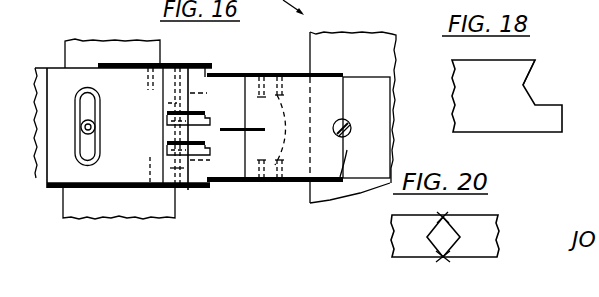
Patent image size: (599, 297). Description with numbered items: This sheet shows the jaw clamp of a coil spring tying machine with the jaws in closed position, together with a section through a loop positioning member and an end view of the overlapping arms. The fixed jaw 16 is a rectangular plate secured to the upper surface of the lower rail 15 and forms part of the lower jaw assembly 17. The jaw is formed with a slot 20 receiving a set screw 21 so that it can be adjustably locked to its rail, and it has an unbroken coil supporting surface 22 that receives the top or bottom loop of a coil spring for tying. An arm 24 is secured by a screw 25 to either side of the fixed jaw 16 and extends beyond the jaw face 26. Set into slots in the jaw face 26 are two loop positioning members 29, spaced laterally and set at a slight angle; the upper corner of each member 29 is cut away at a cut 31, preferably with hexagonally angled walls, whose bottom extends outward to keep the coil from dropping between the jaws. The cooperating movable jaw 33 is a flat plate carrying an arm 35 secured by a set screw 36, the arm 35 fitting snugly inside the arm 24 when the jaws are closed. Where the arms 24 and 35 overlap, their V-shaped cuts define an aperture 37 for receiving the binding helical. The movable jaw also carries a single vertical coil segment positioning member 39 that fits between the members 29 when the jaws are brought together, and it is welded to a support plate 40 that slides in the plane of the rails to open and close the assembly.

In FIG. 16, the lower rail 15 is at (78, 45).
In FIG. 16, the fixed jaw 16 is at (57, 64).
In FIG. 16, the lower jaw assembly 17 is at (217, 65).
In FIG. 16, the slot 20 is at (88, 160).
In FIG. 16, the set screw 21 is at (82, 128).
In FIG. 16, the coil supporting surface 22 is at (178, 182).
In FIG. 16, the arm 24 is at (170, 190).
In FIG. 20, the arm 24 is at (411, 252).
In FIG. 16, the screw 25 is at (133, 63).
In FIG. 16, the jaw face 26 is at (191, 172).
In FIG. 16, the loop positioning member 29 is at (173, 107).
In FIG. 18, the loop positioning member 29 is at (525, 125).
In FIG. 18, the cut 31 is at (528, 88).
In FIG. 16, the lower movable jaw 33 is at (387, 117).
In FIG. 16, the arm 35 is at (238, 72).
In FIG. 20, the arm 35 is at (477, 248).
In FIG. 16, the set screw 36 is at (289, 130).
In FIG. 20, the aperture 37 is at (440, 238).
In FIG. 16, the coil segment positioning member 39 is at (233, 127).
In FIG. 16, the upper support plate 40 is at (333, 33).